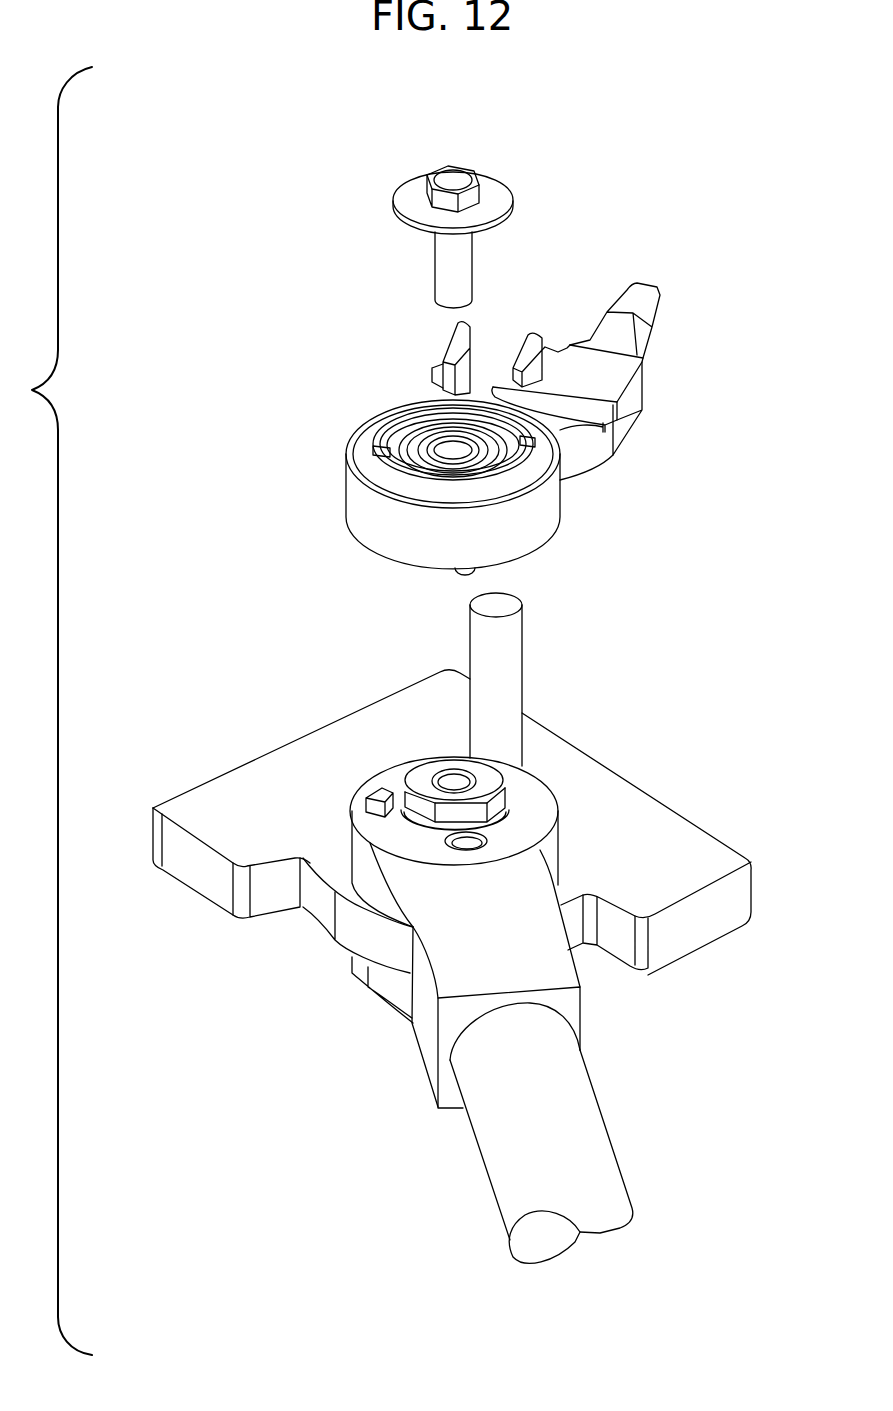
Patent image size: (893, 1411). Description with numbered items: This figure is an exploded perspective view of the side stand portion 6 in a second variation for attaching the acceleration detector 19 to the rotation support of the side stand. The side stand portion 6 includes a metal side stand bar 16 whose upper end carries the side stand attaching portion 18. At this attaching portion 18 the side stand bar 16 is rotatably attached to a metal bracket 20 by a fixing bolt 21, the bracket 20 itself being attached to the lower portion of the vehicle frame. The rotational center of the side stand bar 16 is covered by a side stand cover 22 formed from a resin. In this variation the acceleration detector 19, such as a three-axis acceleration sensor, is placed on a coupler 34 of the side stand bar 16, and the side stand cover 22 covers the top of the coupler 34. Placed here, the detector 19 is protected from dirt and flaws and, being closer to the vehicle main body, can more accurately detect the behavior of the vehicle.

The side stand portion 6 is at (265, 195).
The side stand bar 16 is at (502, 1180).
The side stand attaching portion 18 is at (684, 764).
The acceleration detector 19 is at (368, 792).
The bracket 20 is at (390, 717).
The fixing bolt 21 is at (498, 195).
The side stand cover 22 is at (555, 513).
The coupler 34 is at (530, 790).